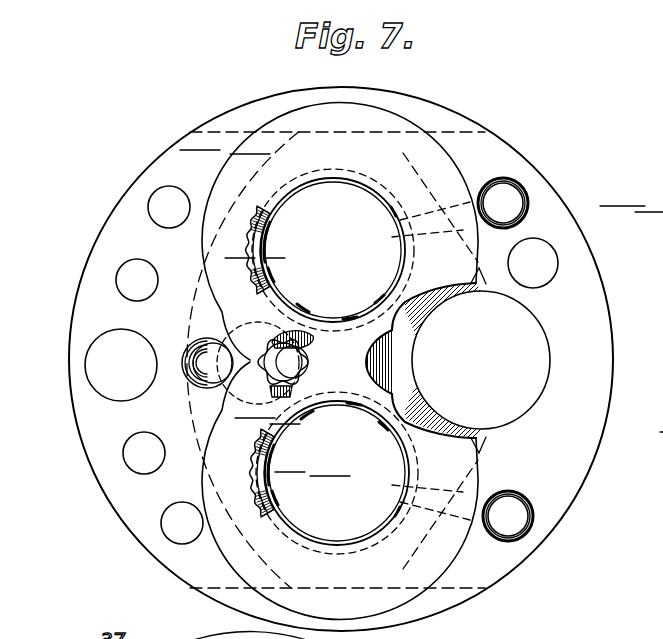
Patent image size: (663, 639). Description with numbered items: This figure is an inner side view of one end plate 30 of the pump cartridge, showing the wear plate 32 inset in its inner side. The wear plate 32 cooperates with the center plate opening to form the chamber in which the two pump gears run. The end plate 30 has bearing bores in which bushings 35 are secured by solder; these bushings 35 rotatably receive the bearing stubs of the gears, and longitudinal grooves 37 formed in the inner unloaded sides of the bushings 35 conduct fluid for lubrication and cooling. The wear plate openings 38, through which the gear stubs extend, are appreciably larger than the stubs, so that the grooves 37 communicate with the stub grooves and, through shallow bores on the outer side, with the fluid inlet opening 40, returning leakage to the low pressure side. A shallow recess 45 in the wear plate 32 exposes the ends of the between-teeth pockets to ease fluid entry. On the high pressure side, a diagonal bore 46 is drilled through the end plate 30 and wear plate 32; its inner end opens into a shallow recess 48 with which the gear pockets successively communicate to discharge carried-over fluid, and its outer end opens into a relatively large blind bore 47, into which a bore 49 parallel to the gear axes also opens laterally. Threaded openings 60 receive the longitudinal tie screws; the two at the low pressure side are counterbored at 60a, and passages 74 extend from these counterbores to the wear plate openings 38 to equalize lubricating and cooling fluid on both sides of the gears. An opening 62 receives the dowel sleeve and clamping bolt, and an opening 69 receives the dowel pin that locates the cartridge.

The end plate 30 is at (87, 265).
The wear plate 32 is at (378, 120).
The bushing 35 is at (273, 218).
The longitudinal groove 37 is at (268, 252).
The wear plate opening 38 is at (358, 180).
The fluid inlet opening 40 is at (515, 303).
The shallow recess 45 is at (400, 384).
The diagonal bore 46 is at (290, 362).
The blind bore 47 is at (212, 372).
The shallow recess 48 is at (312, 372).
The bore 49 is at (190, 345).
The threaded opening 60 is at (168, 222).
The counterbore 60a is at (509, 180).
The dowel sleeve opening 62 is at (97, 357).
The dowel pin opening 69 is at (549, 262).
The passage 74 is at (445, 213).